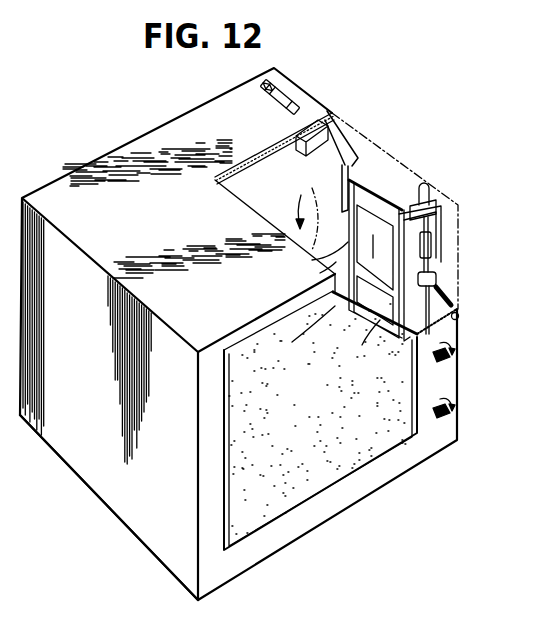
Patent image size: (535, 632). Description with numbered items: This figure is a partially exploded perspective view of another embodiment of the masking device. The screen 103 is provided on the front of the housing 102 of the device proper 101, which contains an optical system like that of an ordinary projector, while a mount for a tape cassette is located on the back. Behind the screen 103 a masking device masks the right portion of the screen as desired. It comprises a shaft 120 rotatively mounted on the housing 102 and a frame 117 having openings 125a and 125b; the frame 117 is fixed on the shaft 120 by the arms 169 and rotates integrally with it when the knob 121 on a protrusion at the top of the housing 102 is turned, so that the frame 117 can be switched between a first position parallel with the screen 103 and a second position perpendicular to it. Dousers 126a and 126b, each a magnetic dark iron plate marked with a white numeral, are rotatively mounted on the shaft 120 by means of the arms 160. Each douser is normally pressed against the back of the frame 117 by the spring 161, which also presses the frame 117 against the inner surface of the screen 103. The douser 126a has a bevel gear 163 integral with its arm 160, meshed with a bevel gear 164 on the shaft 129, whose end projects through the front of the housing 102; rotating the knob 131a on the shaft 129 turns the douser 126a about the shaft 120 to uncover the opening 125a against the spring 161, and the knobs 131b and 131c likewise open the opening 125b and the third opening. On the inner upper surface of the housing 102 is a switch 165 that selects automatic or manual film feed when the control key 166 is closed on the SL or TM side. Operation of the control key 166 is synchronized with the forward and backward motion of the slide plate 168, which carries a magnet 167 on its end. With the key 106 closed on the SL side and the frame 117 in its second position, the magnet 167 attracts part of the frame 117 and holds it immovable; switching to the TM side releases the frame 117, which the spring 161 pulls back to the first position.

The device proper 101 is at (97, 158).
The housing 102 is at (94, 487).
The screen 103 is at (363, 465).
The control key 106 is at (430, 233).
The frame 117 is at (312, 260).
The shaft 120 is at (437, 279).
The knob 121 is at (430, 192).
The opening 125a is at (374, 200).
The opening 125b is at (295, 337).
The douser 126a is at (320, 273).
The douser 126b is at (362, 345).
The shaft 129 is at (404, 341).
The knob 131a is at (456, 348).
The knob 131b is at (449, 360).
The knob 131c is at (450, 414).
The arm 160 is at (380, 326).
The spring 161 is at (431, 253).
The bevel gear 163 is at (447, 302).
The bevel gear 164 is at (458, 318).
The switch 165 is at (274, 148).
The control key 166 is at (297, 104).
The magnet 167 is at (366, 196).
The slide plate 168 is at (338, 142).
The arm 169 is at (440, 213).